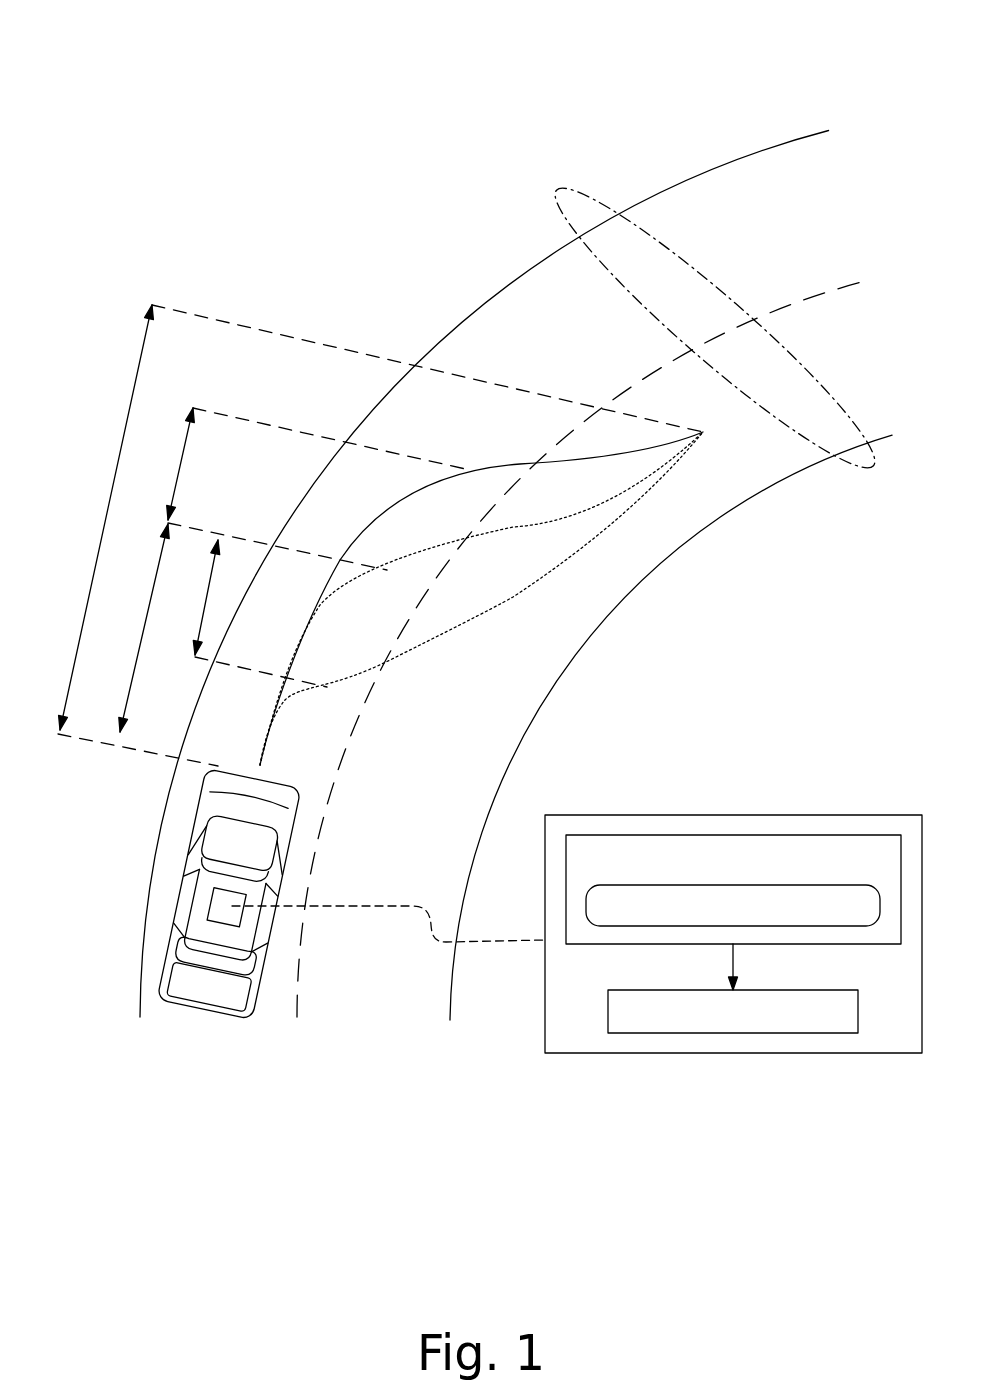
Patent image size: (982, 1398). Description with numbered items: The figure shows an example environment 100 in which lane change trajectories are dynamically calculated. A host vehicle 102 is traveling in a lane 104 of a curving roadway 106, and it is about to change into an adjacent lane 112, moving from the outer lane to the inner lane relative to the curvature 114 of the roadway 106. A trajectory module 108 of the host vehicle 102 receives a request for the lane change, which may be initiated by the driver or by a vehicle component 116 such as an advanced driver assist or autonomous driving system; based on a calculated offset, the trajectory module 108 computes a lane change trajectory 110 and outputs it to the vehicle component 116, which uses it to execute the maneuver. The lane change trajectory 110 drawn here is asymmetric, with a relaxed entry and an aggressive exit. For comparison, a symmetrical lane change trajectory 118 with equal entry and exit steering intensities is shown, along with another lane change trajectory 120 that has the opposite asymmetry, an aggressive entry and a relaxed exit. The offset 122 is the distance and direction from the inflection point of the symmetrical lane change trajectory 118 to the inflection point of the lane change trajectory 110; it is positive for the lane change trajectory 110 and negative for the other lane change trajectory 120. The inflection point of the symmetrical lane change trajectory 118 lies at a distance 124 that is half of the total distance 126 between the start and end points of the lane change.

The example environment 100 is at (823, 55).
The host vehicle 102 is at (237, 1027).
The lane 104 is at (624, 271).
The roadway 106 is at (578, 186).
The trajectory module 108 is at (733, 889).
The lane change trajectory 110 is at (410, 493).
The adjacent lane 112 is at (768, 389).
The curvature 114 is at (749, 693).
The vehicle component 116 is at (733, 1011).
The symmetrical lane change trajectory 118 is at (428, 550).
The other lane change trajectory 120 is at (438, 643).
The offset 122 is at (185, 445).
The distance 124 is at (137, 662).
The total distance 126 is at (146, 335).